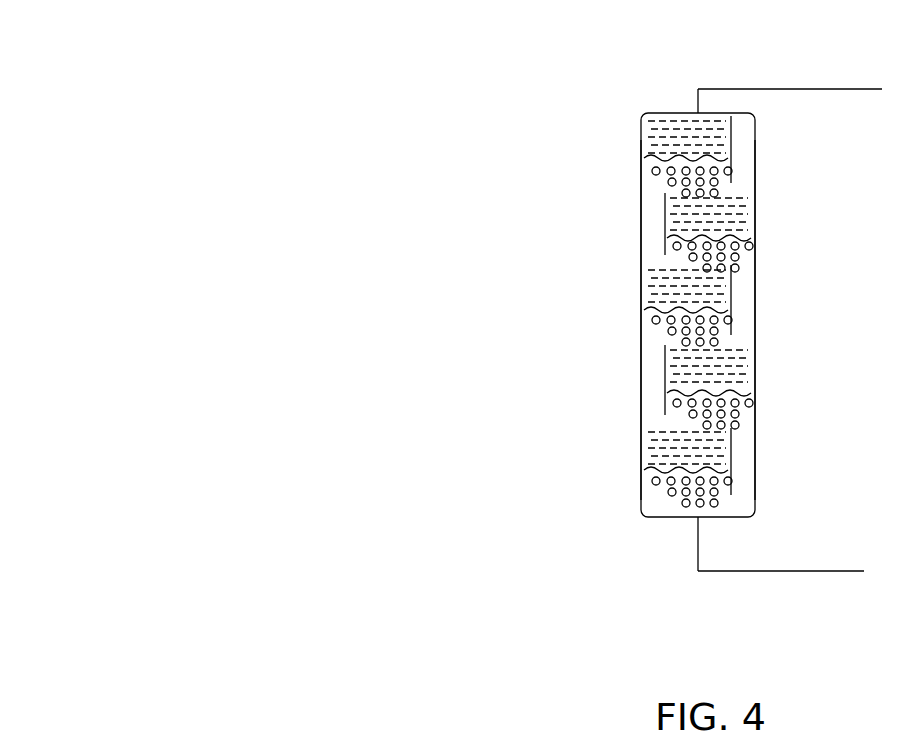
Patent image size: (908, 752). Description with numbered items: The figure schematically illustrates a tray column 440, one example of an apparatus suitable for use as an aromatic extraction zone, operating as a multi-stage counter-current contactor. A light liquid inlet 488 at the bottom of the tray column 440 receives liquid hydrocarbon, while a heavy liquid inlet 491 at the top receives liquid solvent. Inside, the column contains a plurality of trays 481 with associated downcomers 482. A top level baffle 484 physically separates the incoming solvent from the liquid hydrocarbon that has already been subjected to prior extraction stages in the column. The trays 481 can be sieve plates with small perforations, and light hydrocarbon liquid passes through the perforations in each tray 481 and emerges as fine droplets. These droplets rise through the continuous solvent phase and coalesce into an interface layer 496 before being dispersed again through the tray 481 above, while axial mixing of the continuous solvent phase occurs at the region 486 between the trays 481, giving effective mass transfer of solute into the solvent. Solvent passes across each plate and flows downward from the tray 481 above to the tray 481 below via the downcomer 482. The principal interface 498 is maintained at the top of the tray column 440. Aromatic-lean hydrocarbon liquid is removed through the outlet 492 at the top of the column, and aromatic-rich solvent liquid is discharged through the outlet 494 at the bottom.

The tray column 440 is at (502, 71).
The outlet 492 is at (790, 90).
The outlet 494 is at (781, 544).
The top level baffle 484 is at (745, 135).
The heavy liquid inlet 491 is at (758, 147).
The principal interface 498 is at (659, 157).
The downcomer 482 is at (731, 286).
The tray 481 is at (713, 357).
The region 486 is at (747, 370).
The interface layer 496 is at (697, 393).
The light liquid inlet 488 is at (757, 465).